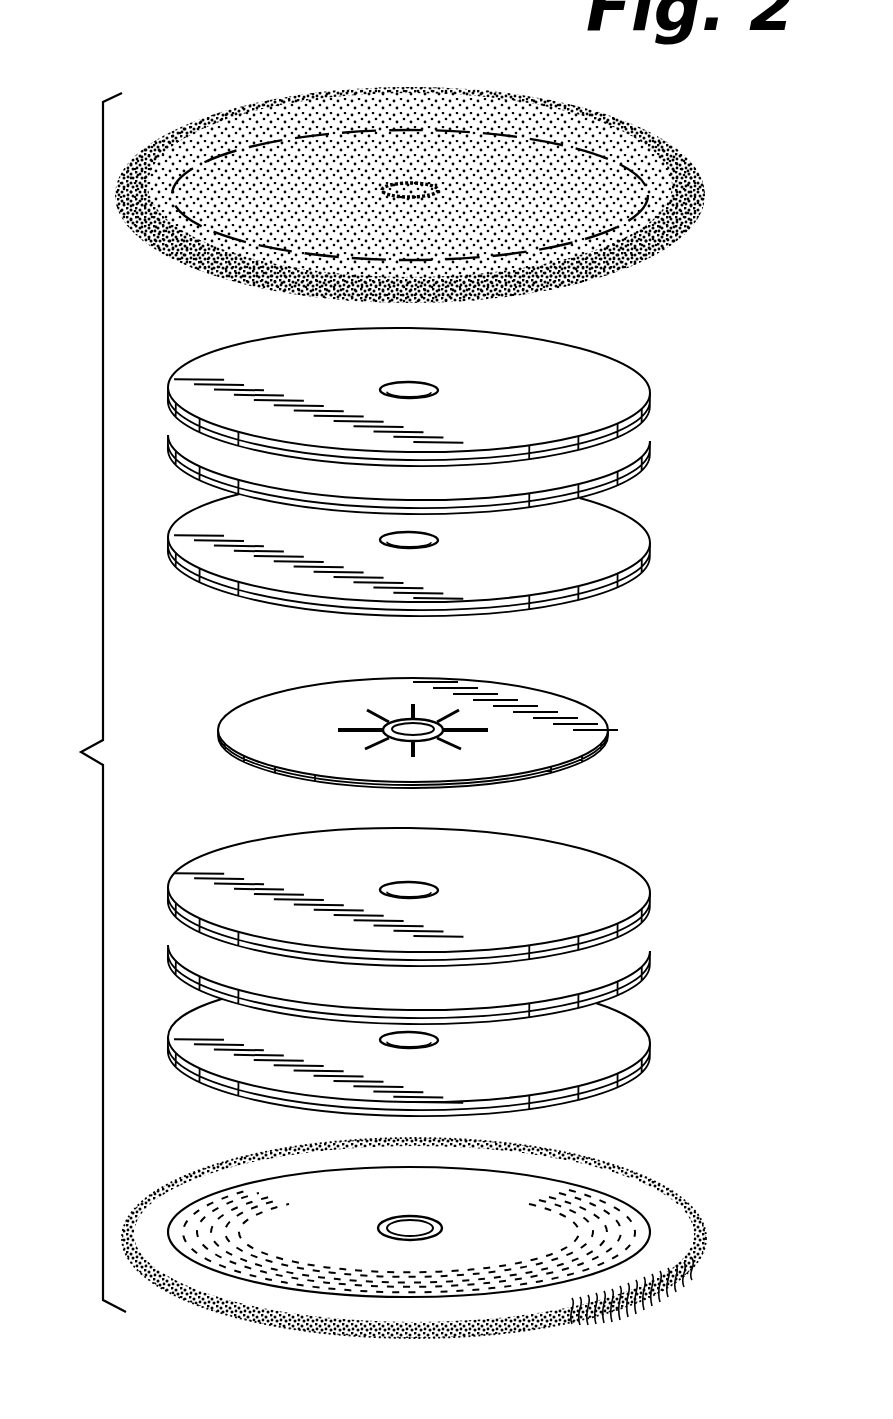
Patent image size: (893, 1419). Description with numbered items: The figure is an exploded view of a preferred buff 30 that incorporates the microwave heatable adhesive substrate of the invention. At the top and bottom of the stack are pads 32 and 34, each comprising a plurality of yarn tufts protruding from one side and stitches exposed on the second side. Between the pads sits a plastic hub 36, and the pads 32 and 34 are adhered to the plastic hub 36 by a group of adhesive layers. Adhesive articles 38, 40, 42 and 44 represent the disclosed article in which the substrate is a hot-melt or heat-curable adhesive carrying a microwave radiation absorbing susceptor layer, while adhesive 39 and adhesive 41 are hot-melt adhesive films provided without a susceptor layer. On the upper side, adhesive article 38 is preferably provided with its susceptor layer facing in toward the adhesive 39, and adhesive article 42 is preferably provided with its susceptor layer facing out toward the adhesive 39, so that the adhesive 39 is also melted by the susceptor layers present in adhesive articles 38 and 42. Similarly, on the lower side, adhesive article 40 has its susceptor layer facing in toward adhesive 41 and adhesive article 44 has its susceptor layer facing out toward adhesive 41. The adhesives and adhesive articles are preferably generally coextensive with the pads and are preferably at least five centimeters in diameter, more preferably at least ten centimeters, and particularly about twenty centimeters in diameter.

The buff 30 is at (76, 702).
The pad 32 is at (696, 191).
The pad 34 is at (697, 1242).
The plastic hub 36 is at (600, 727).
The adhesive article 38 is at (652, 393).
The adhesive 39 is at (653, 452).
The adhesive article 40 is at (654, 1050).
The adhesive 41 is at (654, 952).
The adhesive article 42 is at (654, 549).
The adhesive article 44 is at (654, 893).